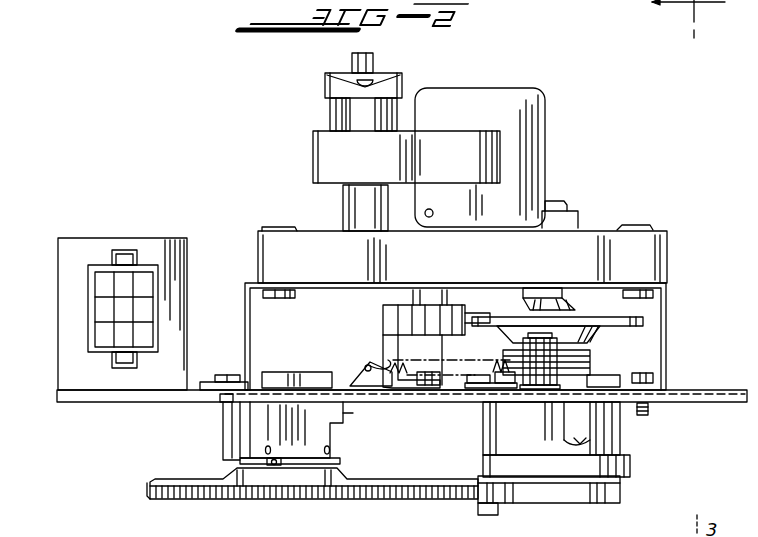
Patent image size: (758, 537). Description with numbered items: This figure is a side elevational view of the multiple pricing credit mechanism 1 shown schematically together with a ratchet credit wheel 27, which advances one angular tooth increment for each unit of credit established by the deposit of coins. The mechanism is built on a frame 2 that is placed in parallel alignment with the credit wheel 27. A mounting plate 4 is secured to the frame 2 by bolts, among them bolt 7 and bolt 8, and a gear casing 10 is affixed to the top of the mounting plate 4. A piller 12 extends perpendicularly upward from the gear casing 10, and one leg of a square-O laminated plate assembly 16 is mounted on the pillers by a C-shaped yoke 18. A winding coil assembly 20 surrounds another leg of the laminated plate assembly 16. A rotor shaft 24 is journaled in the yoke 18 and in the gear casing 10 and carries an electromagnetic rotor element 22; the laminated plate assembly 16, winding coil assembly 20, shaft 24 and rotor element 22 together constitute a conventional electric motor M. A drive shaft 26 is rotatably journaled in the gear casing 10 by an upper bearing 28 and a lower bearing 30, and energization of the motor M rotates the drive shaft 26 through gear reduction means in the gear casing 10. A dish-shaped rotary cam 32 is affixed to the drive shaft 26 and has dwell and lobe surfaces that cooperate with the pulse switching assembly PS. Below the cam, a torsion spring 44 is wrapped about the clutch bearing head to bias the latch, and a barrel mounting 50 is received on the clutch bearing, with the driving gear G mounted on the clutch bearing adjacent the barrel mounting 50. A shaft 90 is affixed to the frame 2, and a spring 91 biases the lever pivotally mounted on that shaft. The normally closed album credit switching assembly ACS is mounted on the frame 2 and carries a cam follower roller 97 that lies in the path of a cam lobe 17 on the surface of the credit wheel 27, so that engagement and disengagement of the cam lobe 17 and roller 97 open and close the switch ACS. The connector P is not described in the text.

The multiple pricing credit mechanism 1 is at (185, 184).
The frame 2 is at (433, 399).
The mounting plate 4 is at (251, 334).
The bolt 7 is at (205, 381).
The bolt 8 is at (639, 416).
The gear casing 10 is at (310, 246).
The piller 12 is at (358, 212).
The laminated plate assembly 16 is at (330, 160).
The cam lobe 17 is at (330, 478).
The C-shaped yoke 18 is at (338, 89).
The winding coil assembly 20 is at (498, 98).
The electromagnetic rotor element 22 is at (338, 113).
The rotor shaft 24 is at (366, 68).
The drive shaft 26 is at (551, 205).
The ratchet credit wheel 27 is at (240, 498).
The upper bearing 28 is at (568, 227).
The lower bearing 30 is at (560, 300).
The rotary cam 32 is at (645, 321).
The torsion spring 44 is at (585, 372).
The barrel mounting 50 is at (492, 430).
The shaft 90 is at (540, 387).
The spring 91 is at (449, 372).
The cam follower roller 97 is at (255, 462).
The electric motor M is at (306, 69).
The plug connector P is at (148, 252).
The pulse switching assembly PS is at (400, 326).
The album credit switching assembly ACS is at (298, 432).
The driving gear G is at (605, 490).